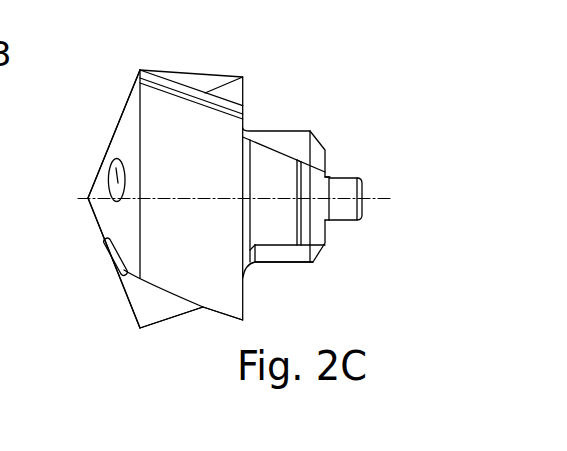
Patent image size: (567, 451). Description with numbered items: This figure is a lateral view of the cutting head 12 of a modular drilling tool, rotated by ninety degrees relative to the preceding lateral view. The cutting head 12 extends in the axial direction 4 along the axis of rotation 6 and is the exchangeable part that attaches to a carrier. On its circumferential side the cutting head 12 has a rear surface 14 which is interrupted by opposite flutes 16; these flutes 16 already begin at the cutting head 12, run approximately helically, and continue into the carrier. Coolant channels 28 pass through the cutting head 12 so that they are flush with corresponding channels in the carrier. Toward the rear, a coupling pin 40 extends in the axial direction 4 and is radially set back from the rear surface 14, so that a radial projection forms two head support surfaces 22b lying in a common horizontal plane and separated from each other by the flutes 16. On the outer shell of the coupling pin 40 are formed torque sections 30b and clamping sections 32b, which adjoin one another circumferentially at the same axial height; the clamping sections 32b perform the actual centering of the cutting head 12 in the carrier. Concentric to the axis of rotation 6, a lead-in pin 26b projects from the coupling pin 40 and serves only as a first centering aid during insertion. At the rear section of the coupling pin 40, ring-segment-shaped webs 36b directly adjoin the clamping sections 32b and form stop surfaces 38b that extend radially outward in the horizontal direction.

The axial direction 4 is at (90, 199).
The axis of rotation 6 is at (114, 263).
The cutting head 12 is at (383, 63).
The rear surface 14 is at (227, 295).
The flutes 16 is at (147, 305).
The head support surfaces 22b is at (245, 84).
The lead-in pin 26b is at (356, 176).
The coolant channels 28 is at (114, 160).
The torque sections 30b is at (282, 262).
The clamping sections 32b is at (289, 185).
The webs 36b is at (292, 185).
The stop surfaces 38b is at (296, 233).
The coupling pin 40 is at (267, 147).